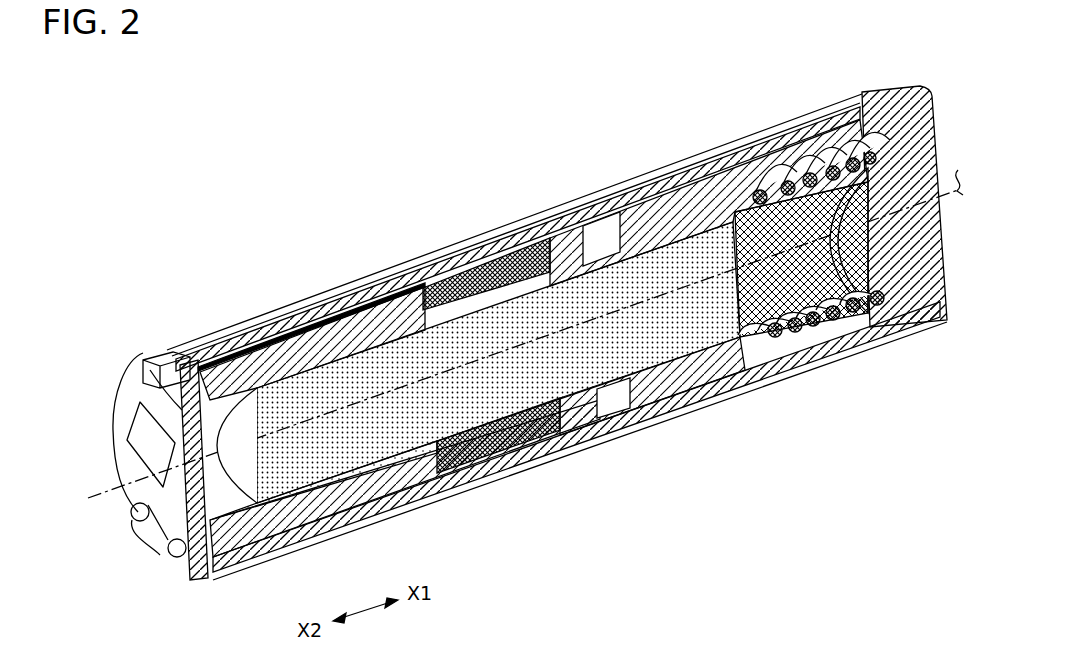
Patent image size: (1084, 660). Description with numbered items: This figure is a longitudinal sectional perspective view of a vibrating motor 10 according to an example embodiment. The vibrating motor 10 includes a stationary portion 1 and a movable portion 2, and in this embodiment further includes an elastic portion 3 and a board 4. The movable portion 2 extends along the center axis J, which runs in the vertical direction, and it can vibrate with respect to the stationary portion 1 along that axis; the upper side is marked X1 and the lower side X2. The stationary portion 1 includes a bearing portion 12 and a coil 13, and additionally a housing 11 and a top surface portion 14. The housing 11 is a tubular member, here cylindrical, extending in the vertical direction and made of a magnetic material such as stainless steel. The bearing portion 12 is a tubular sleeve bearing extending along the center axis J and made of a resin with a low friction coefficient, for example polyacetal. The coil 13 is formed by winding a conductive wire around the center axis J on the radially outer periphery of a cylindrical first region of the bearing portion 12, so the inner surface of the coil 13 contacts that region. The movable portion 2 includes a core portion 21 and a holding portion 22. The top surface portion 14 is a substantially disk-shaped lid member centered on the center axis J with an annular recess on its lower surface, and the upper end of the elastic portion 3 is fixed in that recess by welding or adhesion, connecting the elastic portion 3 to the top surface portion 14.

The vibrating motor 10 is at (802, 47).
The stationary portion 1 is at (503, 142).
The housing 11 is at (318, 294).
The bearing portion 12 is at (372, 337).
The coil 13 is at (468, 262).
The top surface portion 14 is at (850, 98).
The movable portion 2 is at (718, 498).
The core portion 21 is at (612, 362).
The holding portion 22 is at (707, 372).
The elastic portion 3 is at (797, 322).
The board 4 is at (129, 386).